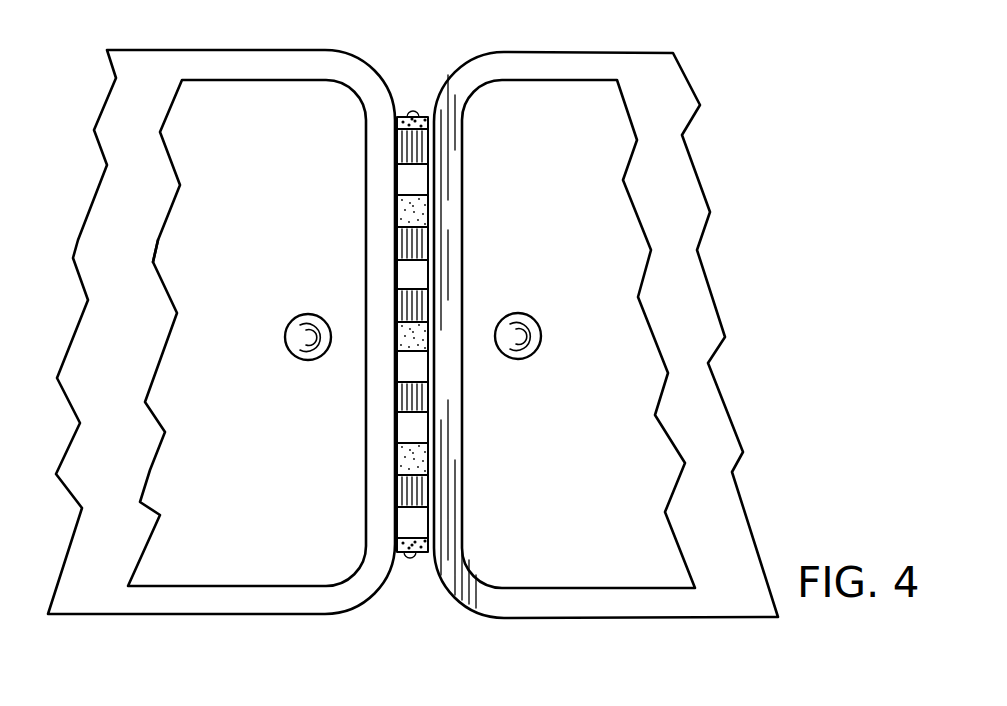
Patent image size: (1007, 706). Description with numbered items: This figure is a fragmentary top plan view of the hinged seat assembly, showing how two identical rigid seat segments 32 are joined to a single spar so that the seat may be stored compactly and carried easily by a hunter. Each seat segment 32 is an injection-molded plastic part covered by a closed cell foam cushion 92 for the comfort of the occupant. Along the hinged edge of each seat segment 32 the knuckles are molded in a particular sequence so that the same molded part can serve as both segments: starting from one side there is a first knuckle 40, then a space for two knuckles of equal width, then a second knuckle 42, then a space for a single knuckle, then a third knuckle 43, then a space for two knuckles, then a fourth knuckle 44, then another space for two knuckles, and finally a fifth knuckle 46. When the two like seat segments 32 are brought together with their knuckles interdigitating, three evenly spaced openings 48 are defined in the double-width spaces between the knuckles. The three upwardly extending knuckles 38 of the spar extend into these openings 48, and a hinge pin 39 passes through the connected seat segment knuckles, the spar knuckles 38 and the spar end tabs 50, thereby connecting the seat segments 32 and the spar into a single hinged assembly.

The seat segment 32 is at (200, 620).
The knuckle of the spar 38 is at (430, 212).
The hinge pin 39 is at (410, 562).
The first knuckle 40 is at (427, 143).
The second knuckle 42 is at (430, 238).
The third knuckle 43 is at (430, 305).
The fourth knuckle 44 is at (407, 275).
The fifth knuckle 46 is at (410, 182).
The opening 48 is at (397, 215).
The spar end tab 50 is at (424, 112).
The closed cell foam cushion 92 is at (157, 365).